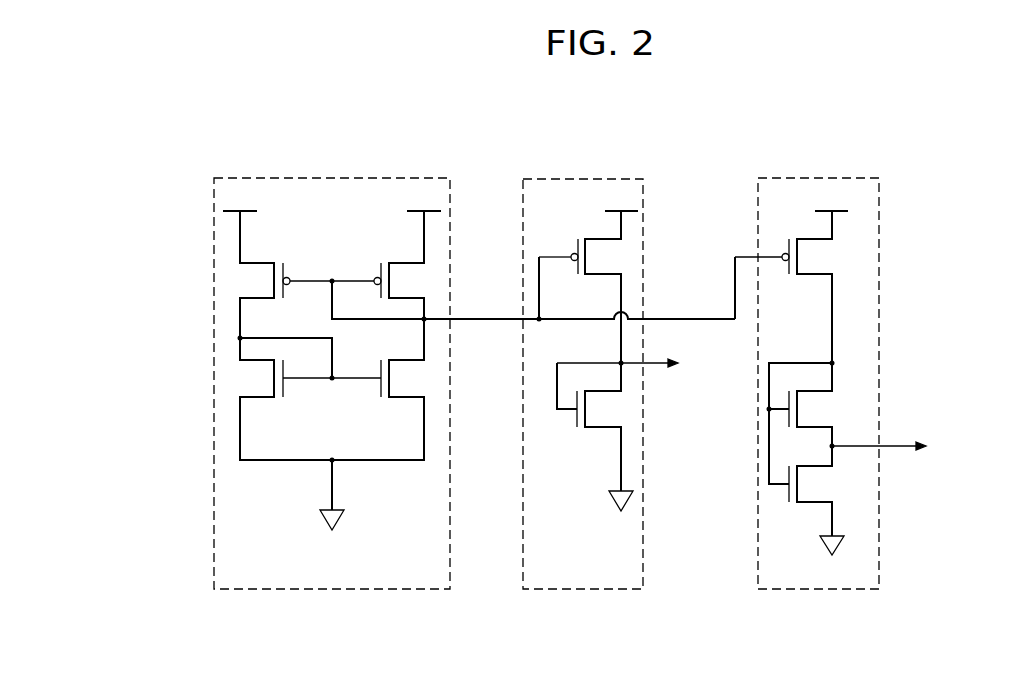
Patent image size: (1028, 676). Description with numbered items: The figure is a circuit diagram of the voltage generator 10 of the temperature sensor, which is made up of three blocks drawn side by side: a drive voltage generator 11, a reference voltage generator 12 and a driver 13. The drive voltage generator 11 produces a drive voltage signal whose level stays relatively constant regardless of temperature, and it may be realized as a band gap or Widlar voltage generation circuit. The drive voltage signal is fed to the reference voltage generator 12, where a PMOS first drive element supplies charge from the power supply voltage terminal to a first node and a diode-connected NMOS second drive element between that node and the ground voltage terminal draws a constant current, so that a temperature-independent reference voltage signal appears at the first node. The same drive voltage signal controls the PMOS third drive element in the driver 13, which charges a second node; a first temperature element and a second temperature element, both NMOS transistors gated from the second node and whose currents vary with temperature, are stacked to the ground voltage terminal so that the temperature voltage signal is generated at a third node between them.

The voltage generator 10 is at (1005, 139).
The drive voltage generator 11 is at (450, 197).
The reference voltage generator 12 is at (643, 197).
The driver 13 is at (860, 178).